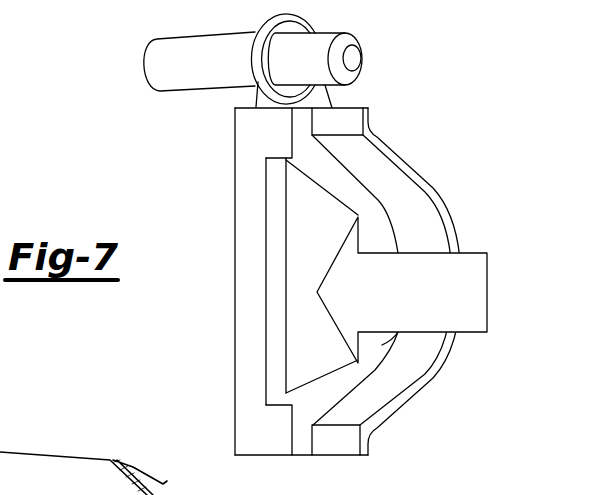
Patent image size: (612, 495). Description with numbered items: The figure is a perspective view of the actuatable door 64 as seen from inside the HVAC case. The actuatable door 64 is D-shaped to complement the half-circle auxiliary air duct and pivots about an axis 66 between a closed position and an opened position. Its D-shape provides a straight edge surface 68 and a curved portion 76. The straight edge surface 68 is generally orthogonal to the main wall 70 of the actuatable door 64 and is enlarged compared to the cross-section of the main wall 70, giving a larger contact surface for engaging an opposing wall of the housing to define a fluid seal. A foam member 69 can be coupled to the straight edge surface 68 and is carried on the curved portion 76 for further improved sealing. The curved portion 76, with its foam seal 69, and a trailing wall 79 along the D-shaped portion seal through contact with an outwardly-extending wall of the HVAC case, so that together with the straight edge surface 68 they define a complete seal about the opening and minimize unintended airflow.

The actuatable door 64 is at (232, 204).
The axis 66 is at (157, 72).
The straight edge surface 68 is at (237, 289).
The foam member 69 is at (340, 173).
The main wall 70 is at (300, 318).
The curved portion 76 is at (385, 352).
The trailing wall 79 is at (445, 215).